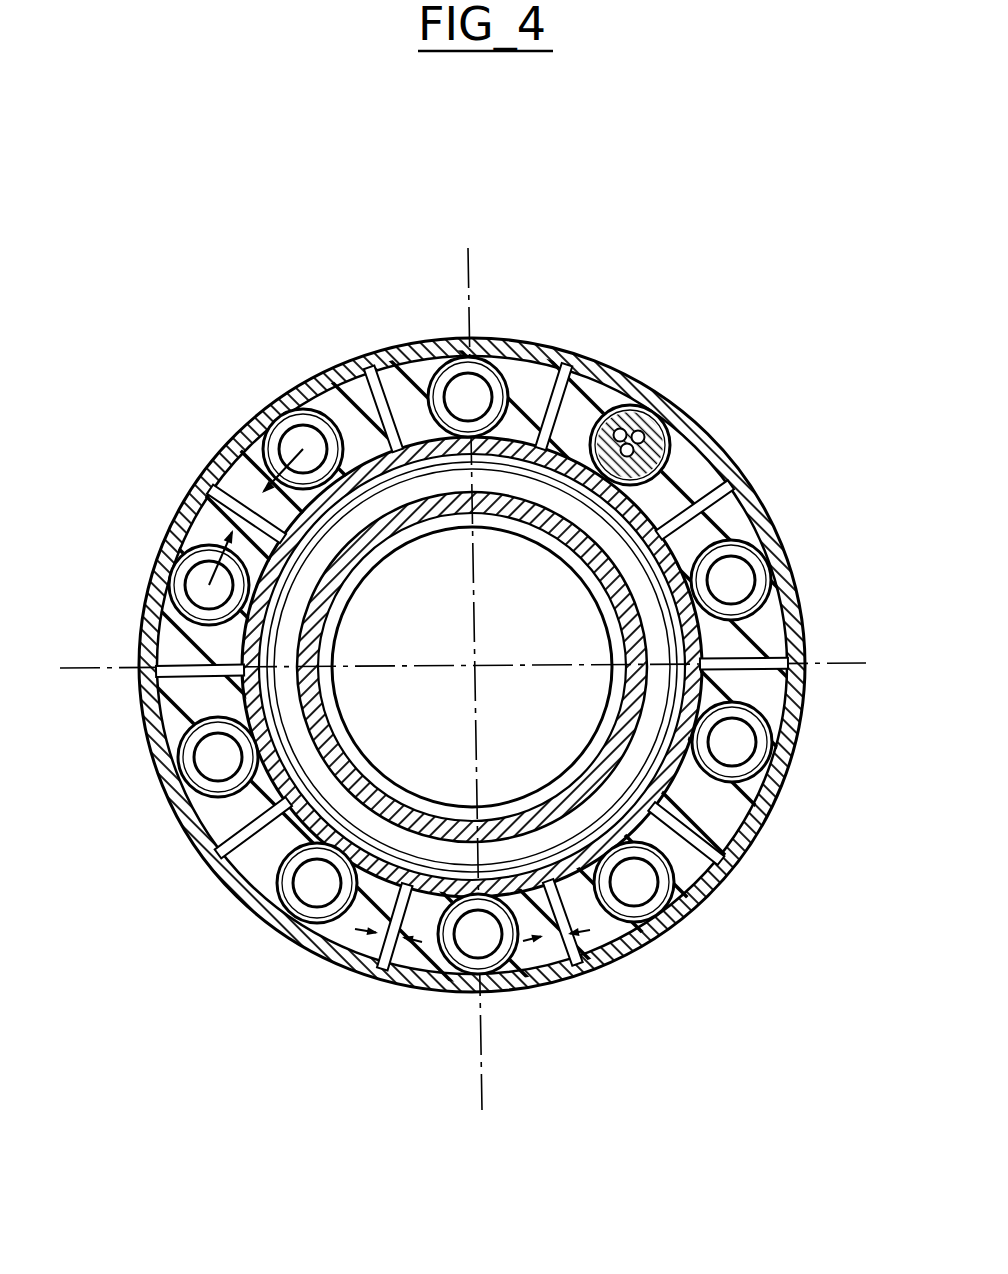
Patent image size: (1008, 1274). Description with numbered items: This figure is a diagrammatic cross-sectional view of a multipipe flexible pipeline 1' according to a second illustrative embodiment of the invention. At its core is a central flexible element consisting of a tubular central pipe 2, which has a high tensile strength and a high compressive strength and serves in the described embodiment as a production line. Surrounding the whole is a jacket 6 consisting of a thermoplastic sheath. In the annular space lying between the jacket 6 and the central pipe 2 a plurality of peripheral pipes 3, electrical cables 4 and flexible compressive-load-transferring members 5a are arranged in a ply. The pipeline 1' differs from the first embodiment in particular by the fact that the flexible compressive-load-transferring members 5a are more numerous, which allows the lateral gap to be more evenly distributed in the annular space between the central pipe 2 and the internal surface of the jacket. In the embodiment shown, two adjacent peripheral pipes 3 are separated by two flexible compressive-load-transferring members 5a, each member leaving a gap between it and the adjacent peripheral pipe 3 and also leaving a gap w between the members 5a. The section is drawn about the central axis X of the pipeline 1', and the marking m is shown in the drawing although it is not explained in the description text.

The multipipe flexible pipeline 1' is at (504, 617).
The tubular central pipe 2 is at (218, 690).
The peripheral pipes 3 is at (209, 585).
The electrical cables 4 is at (632, 418).
The flexible compressive-load-transferring members 5a is at (195, 833).
The jacket 6 is at (352, 960).
The cage bar thickness m is at (250, 472).
The axis of rotation X is at (475, 664).
The gap between members w is at (475, 918).